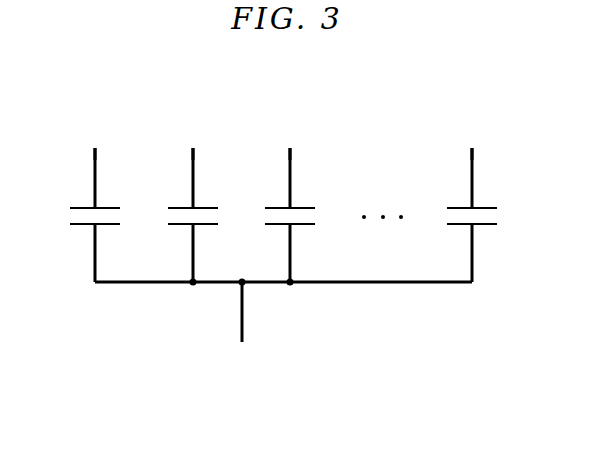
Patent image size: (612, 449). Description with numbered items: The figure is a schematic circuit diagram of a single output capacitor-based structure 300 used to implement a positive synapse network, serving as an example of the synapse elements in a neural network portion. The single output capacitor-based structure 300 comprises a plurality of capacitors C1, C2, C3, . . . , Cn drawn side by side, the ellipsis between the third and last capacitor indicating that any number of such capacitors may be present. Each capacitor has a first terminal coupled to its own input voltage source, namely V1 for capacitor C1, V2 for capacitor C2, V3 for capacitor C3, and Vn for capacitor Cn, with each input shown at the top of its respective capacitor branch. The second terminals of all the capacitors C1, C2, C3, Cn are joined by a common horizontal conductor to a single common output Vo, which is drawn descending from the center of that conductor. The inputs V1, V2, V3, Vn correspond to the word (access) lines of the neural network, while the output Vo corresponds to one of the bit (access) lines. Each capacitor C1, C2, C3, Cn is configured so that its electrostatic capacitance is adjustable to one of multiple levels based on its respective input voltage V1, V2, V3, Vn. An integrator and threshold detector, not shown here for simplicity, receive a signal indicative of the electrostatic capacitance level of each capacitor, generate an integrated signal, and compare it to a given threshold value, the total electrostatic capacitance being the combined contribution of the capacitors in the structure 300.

The single output capacitor-based structure 300 is at (268, 77).
The capacitor C1 is at (93, 215).
The capacitor C2 is at (191, 215).
The capacitor C3 is at (288, 215).
The capacitor Cn is at (470, 215).
The input voltage source V1 is at (96, 139).
The input voltage source V2 is at (194, 139).
The input voltage source V3 is at (291, 139).
The input voltage source Vn is at (473, 139).
The single common output Vo is at (242, 327).